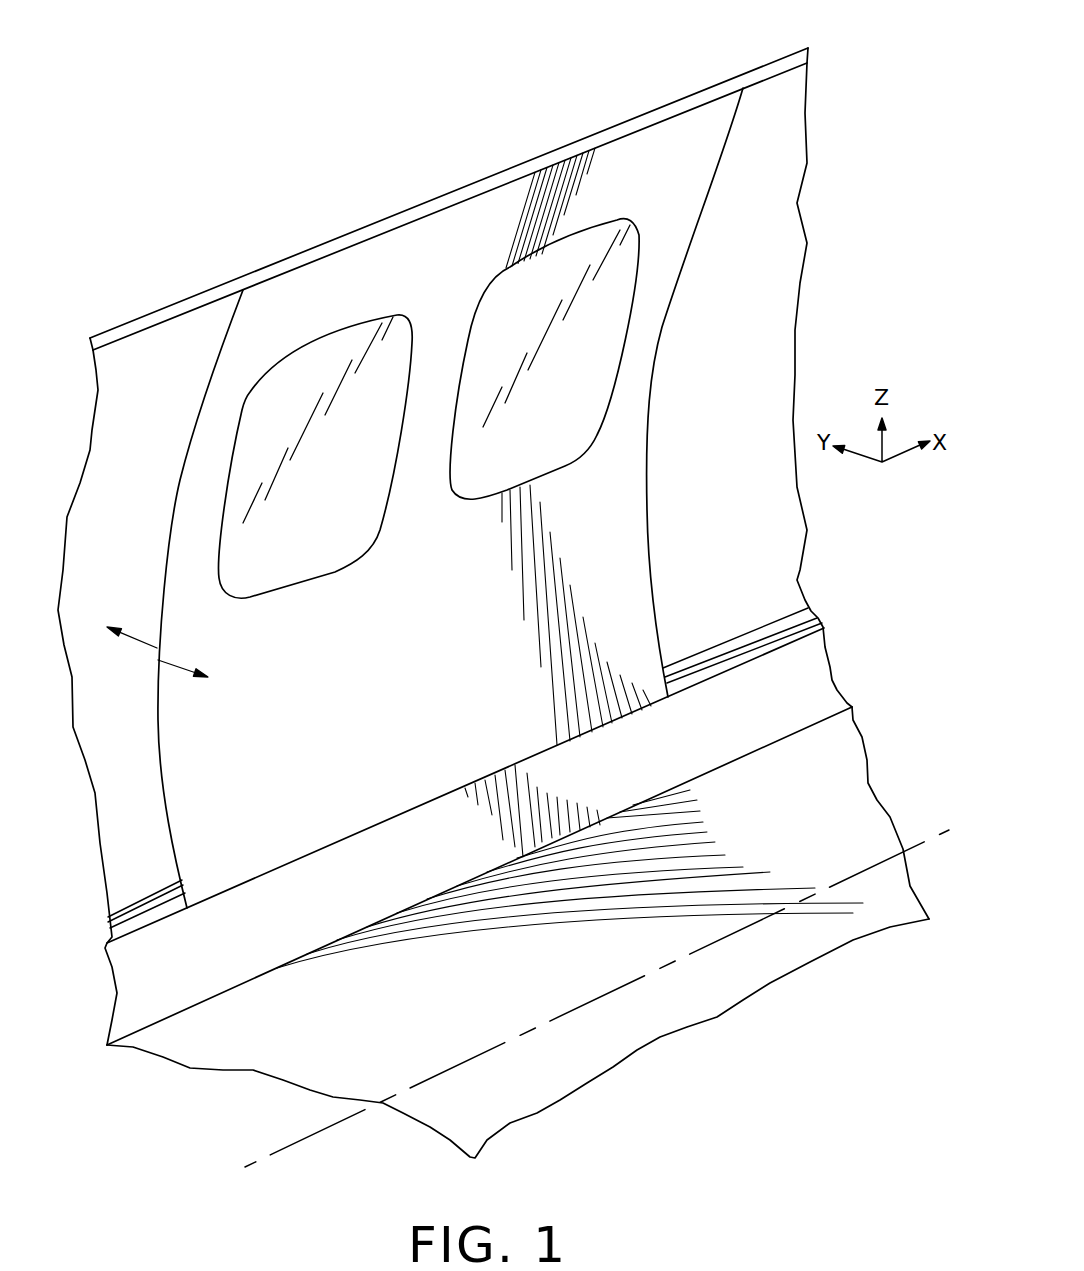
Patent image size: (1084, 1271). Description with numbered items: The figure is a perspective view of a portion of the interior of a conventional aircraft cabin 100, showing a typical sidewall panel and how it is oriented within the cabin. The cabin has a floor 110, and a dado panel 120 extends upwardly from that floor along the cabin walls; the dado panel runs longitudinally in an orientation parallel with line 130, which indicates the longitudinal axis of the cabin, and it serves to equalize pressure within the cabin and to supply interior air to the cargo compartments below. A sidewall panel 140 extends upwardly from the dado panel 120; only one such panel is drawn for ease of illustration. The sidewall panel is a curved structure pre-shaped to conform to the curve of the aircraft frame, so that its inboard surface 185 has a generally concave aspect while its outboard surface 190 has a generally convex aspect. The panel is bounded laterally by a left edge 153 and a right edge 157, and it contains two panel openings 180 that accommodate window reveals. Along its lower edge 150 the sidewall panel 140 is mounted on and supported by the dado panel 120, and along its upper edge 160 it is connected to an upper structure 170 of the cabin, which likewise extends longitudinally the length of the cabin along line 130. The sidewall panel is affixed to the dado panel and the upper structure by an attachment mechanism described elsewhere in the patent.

The aircraft cabin 100 is at (168, 177).
The floor 110 is at (540, 998).
The dado panel 120 is at (187, 985).
The line 130 is at (498, 1046).
The sidewall panel 140 is at (461, 498).
The lower edge 150 is at (343, 841).
The left edge 153 is at (170, 779).
The right edge 157 is at (648, 508).
The upper edge 160 is at (662, 120).
The upper structure 170 is at (163, 309).
The panel opening 180 is at (327, 533).
The inboard surface 185 is at (170, 661).
The outboard surface 190 is at (143, 637).